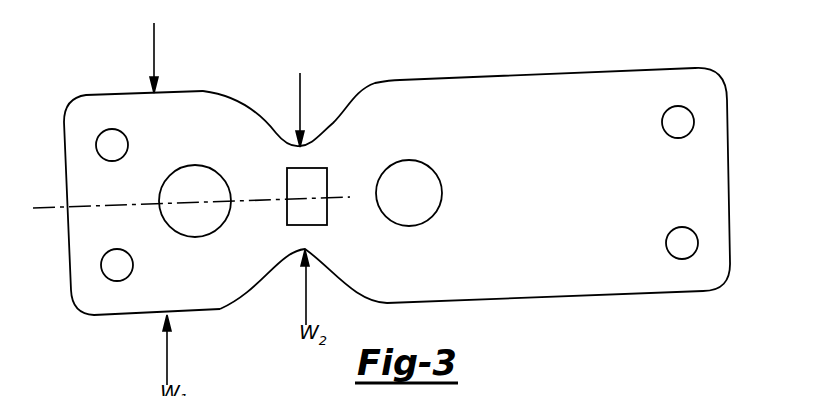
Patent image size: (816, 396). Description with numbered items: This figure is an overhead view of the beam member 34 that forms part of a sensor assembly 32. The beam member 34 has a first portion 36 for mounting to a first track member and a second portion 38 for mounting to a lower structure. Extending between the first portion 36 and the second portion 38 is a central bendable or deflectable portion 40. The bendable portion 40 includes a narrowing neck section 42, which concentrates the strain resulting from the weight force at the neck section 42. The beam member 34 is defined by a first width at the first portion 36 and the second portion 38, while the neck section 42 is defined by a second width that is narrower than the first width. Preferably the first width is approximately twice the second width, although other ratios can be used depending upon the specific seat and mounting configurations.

The sensor assembly 32 is at (288, 170).
The beam member 34 is at (558, 210).
The first portion 36 is at (91, 117).
The second portion 38 is at (412, 252).
The central bendable portion 40 is at (268, 229).
The neck section 42 is at (306, 237).